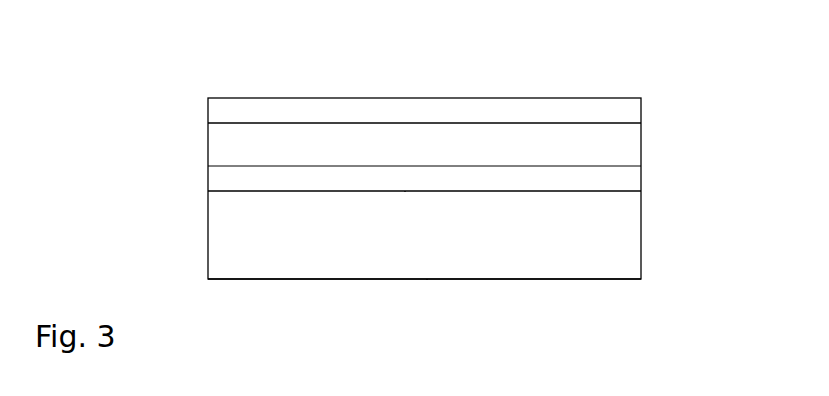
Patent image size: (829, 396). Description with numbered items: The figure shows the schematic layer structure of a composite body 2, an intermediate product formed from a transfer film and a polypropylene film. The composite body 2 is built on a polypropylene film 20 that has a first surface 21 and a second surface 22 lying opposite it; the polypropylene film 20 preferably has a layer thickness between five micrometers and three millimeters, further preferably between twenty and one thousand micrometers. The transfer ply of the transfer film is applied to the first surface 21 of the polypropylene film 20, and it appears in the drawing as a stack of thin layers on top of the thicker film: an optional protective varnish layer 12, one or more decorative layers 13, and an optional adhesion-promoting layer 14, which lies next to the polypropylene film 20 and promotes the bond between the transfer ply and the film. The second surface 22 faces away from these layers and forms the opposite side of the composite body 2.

The composite body 2 is at (705, 160).
The protective varnish layer 12 is at (218, 113).
The decorative layer 13 is at (223, 150).
The adhesion-promoting layer 14 is at (223, 180).
The polypropylene film 20 is at (223, 228).
The first surface 21 is at (405, 192).
The second surface 22 is at (427, 280).